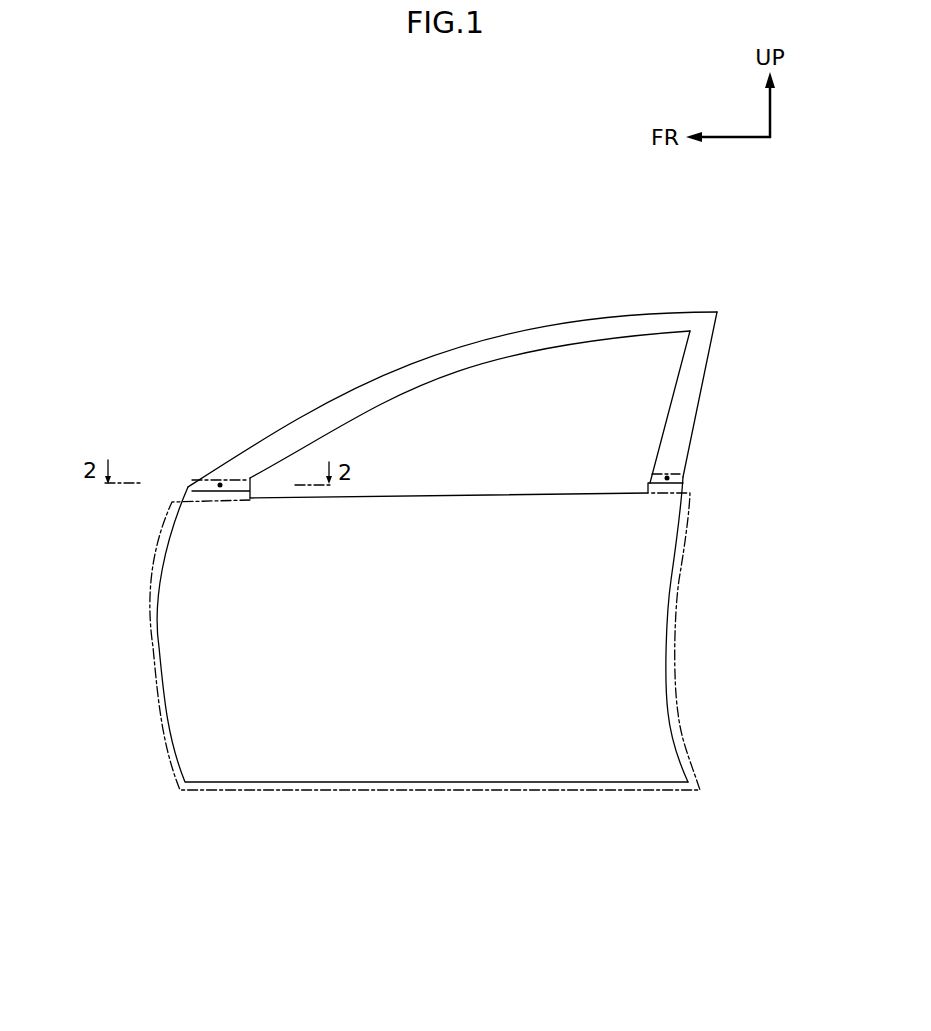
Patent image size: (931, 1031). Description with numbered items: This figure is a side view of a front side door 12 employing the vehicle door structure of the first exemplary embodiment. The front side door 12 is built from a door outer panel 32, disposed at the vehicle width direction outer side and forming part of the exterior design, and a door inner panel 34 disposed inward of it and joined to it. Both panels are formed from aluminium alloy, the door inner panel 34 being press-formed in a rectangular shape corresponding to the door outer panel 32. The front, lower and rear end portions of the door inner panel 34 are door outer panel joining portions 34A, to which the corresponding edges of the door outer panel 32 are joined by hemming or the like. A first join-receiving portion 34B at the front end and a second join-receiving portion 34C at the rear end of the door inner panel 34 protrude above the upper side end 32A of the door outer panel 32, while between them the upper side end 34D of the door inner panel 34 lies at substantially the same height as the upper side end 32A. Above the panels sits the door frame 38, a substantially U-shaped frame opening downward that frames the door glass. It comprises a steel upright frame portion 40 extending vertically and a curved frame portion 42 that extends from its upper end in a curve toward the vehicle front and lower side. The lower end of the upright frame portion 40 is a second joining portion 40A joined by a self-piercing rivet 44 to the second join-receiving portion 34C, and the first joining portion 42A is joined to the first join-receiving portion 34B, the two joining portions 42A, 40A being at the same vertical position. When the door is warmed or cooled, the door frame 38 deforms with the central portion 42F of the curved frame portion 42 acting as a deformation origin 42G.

The front side door 12 is at (245, 290).
The door outer panel 32 is at (160, 750).
The upper side end of the door outer panel 32A is at (462, 498).
The door inner panel 34 is at (292, 788).
The door outer panel joining portions 34A is at (167, 604).
The first join-receiving portion 34B is at (190, 482).
The second join-receiving portion 34C is at (677, 477).
The upper side end of the door inner panel 34D is at (383, 498).
The door frame 38 is at (628, 233).
The upright frame portion 40 is at (713, 337).
The second joining portion 40A is at (653, 478).
The curved frame portion 42 is at (668, 308).
The first joining portion 42A is at (207, 478).
The central portion of the curved frame portion 42F is at (418, 368).
The deformation origin 42G is at (470, 404).
The self-piercing rivet 44 is at (223, 484).